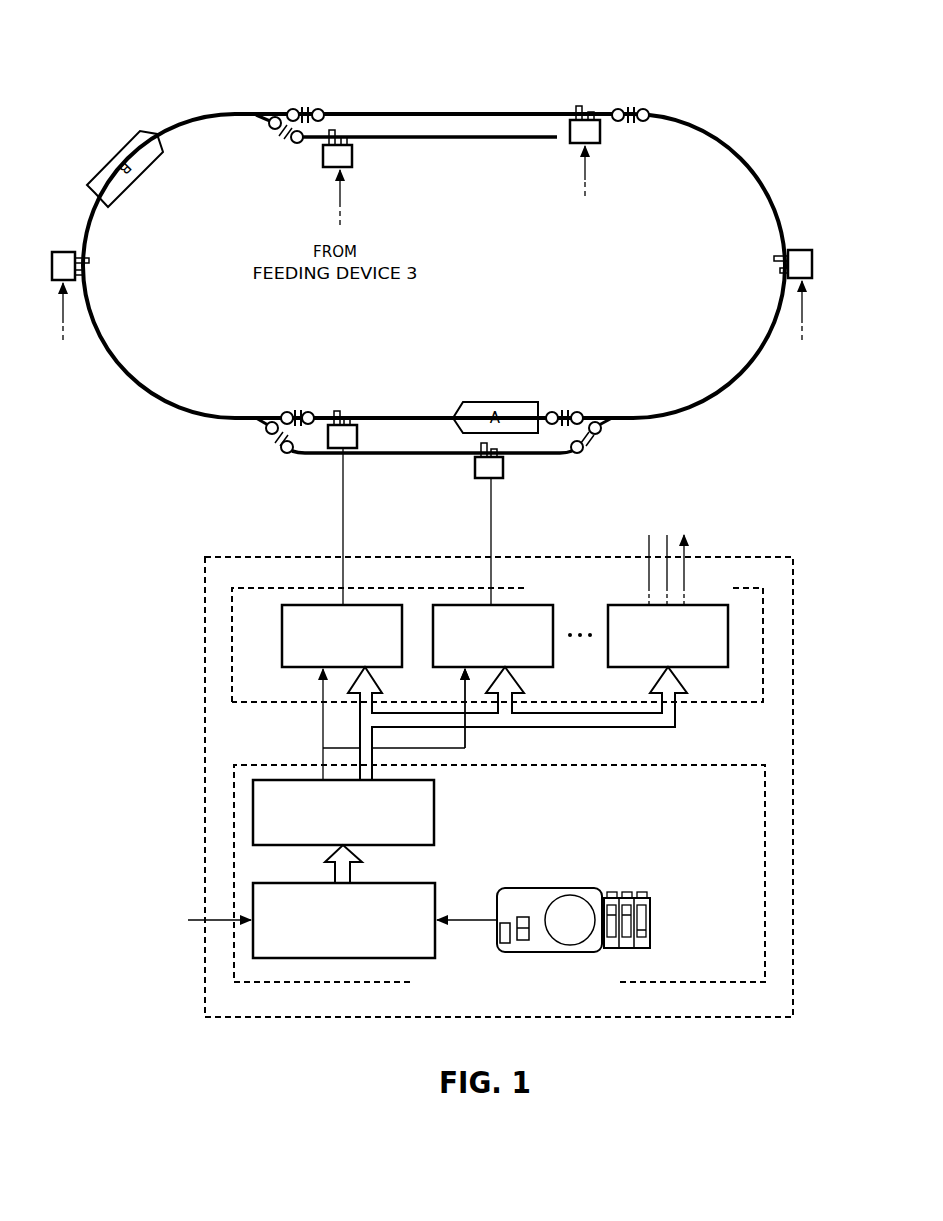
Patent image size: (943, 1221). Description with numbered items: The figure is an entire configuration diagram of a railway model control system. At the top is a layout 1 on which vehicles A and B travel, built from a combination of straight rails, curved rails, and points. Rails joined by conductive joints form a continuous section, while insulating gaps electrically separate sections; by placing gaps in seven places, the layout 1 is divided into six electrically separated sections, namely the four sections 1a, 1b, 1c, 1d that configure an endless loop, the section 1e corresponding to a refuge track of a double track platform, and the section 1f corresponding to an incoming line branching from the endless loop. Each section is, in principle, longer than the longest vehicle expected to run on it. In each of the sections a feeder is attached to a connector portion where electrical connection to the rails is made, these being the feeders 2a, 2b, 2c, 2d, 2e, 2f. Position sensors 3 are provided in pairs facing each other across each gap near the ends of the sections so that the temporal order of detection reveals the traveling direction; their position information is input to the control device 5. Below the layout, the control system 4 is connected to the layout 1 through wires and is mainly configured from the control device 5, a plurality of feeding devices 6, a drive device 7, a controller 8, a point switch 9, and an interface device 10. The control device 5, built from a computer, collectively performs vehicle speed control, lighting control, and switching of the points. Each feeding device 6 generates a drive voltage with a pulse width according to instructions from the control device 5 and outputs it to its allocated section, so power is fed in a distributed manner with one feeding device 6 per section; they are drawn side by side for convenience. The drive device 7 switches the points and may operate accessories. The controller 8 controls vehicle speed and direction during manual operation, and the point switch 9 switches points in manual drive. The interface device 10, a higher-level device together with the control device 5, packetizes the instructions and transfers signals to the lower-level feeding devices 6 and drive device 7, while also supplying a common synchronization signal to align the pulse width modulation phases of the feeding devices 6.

The layout 1 is at (434, 279).
The section 1a is at (427, 412).
The section 1b is at (125, 370).
The section 1c is at (390, 108).
The section 1d is at (746, 365).
The section 1e is at (410, 458).
The section 1f is at (436, 142).
The feeder 2a is at (357, 425).
The feeder 2b is at (63, 252).
The feeder 2c is at (598, 143).
The feeder 2d is at (805, 250).
The feeder 2e is at (503, 470).
The feeder 2f is at (326, 167).
The position sensor 3 is at (290, 109).
The control system 4 is at (740, 557).
The control device 5 is at (344, 920).
The feeding device 6 is at (417, 636).
The drive device 7 is at (668, 601).
The controller 8 is at (553, 888).
The point switch 9 is at (620, 892).
The interface device 10 is at (343, 812).